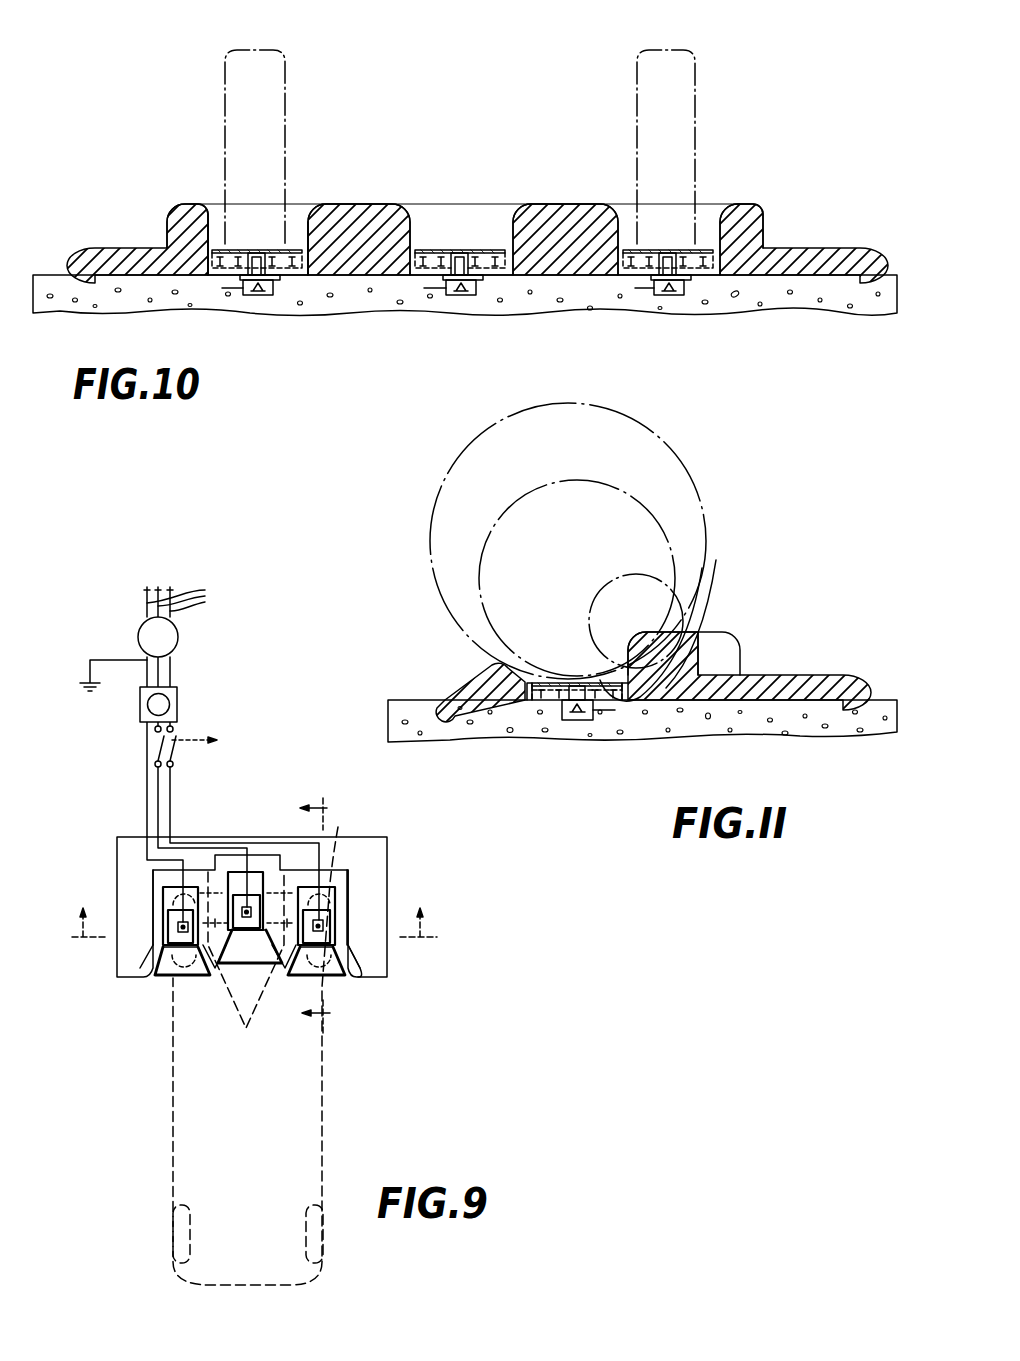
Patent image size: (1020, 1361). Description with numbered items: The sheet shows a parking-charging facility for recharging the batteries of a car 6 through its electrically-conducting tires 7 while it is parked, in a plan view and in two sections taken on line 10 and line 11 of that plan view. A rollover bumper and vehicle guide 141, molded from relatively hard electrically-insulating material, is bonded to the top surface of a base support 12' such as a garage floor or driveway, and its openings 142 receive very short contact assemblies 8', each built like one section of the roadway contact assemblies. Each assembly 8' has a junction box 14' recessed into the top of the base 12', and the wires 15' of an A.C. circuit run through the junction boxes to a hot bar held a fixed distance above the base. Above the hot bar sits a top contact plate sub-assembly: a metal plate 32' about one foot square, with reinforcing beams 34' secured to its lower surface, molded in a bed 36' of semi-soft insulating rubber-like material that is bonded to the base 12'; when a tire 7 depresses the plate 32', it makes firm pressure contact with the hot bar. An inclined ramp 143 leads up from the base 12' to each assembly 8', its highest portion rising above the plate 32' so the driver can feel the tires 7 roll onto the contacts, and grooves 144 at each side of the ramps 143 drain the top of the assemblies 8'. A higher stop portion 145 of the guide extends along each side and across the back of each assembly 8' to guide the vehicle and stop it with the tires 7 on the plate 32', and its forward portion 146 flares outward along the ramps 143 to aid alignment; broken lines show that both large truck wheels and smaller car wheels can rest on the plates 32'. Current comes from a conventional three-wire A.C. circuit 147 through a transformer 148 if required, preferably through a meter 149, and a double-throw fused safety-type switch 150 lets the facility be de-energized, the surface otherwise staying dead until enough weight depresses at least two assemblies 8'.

In FIG. 9, the car 6 is at (326, 1110).
In FIG. 10, the tires 7 is at (284, 62).
In FIG. 11, the tires 7 is at (716, 570).
In FIG. 9, the tires 7 is at (332, 845).
In FIG. 10, the contact assembly 8' is at (462, 189).
In FIG. 11, the contact assembly 8' is at (569, 632).
In FIG. 10, the base support 12' is at (465, 310).
In FIG. 11, the base support 12' is at (645, 696).
In FIG. 10, the junction box 14' is at (376, 314).
In FIG. 11, the junction box 14' is at (564, 739).
In FIG. 9, the junction box 14' is at (300, 911).
In FIG. 10, the wires 15' is at (437, 320).
In FIG. 11, the wires 15' is at (627, 744).
In FIG. 9, the wires 15' is at (199, 754).
In FIG. 10, the metal plate 32' is at (473, 219).
In FIG. 10, the reinforcing beams 34' is at (458, 215).
In FIG. 10, the bed 36' is at (513, 215).
In FIG. 10, the rollover bumper and vehicle guide 141 is at (92, 248).
In FIG. 11, the rollover bumper and vehicle guide 141 is at (785, 675).
In FIG. 9, the rollover bumper and vehicle guide 141 is at (387, 838).
In FIG. 10, the openings 142 is at (214, 236).
In FIG. 11, the inclined ramp 143 is at (470, 688).
In FIG. 9, the inclined ramp 143 is at (183, 978).
In FIG. 9, the grooves 144 is at (345, 978).
In FIG. 10, the stop portion 145 is at (173, 215).
In FIG. 11, the stop portion 145 is at (735, 640).
In FIG. 9, the stop portion 145 is at (153, 895).
In FIG. 9, the forward portion 146 is at (357, 968).
In FIG. 9, the three-wire A.C. circuit 147 is at (195, 596).
In FIG. 9, the transformer 148 is at (180, 640).
In FIG. 9, the meter 149 is at (178, 700).
In FIG. 9, the switch 150 is at (176, 758).
In FIG. 9, the section line 10— 10 is at (252, 916).
In FIG. 9, the section line 11— 11 is at (304, 914).